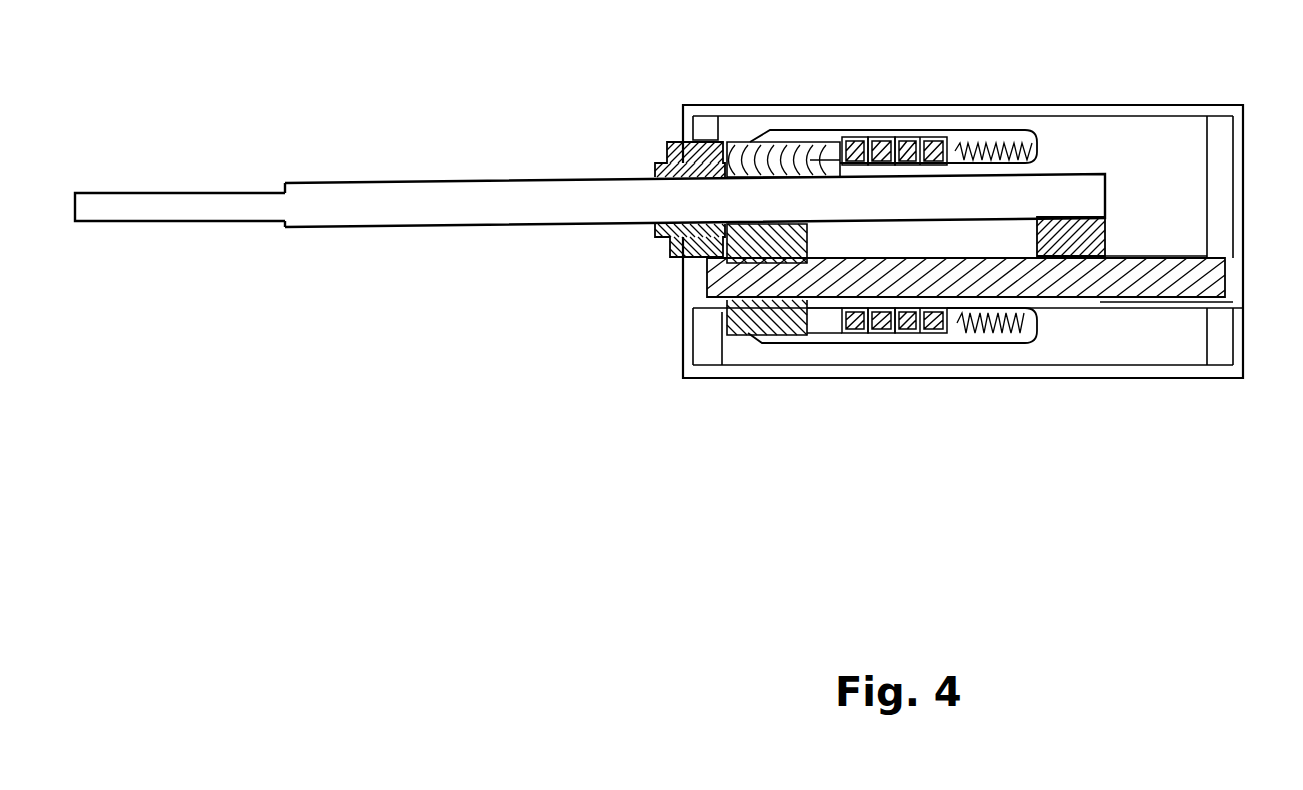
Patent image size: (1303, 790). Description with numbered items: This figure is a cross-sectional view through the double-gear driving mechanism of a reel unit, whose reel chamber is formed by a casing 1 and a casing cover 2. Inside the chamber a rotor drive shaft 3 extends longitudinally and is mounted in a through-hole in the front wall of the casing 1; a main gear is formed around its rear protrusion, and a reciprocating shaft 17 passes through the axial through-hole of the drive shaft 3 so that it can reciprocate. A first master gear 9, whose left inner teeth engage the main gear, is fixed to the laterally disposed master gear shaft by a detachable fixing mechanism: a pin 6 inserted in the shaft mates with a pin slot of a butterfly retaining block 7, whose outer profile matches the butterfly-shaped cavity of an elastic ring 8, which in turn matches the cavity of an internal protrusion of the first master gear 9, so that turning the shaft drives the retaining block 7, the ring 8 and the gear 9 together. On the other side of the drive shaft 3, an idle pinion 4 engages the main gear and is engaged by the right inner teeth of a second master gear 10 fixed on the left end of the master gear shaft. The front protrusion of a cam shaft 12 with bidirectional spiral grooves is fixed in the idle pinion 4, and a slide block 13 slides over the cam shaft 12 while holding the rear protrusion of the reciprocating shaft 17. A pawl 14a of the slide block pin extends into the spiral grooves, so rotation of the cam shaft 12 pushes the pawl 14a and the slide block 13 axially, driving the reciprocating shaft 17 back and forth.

The casing 1 is at (1170, 104).
The casing cover 2 is at (1245, 330).
The rotor drive shaft 3 is at (487, 178).
The idle pinion 4 is at (748, 312).
The pin 6 is at (903, 165).
The butterfly retaining block 7 is at (882, 165).
The elastic ring 8 is at (850, 165).
The first master gear 9 is at (947, 165).
The second master gear 10 is at (950, 333).
The cam shaft 12 is at (1182, 298).
The slide block 13 is at (1107, 235).
The pawl 14a is at (1092, 298).
The reciprocating shaft 17 is at (322, 207).